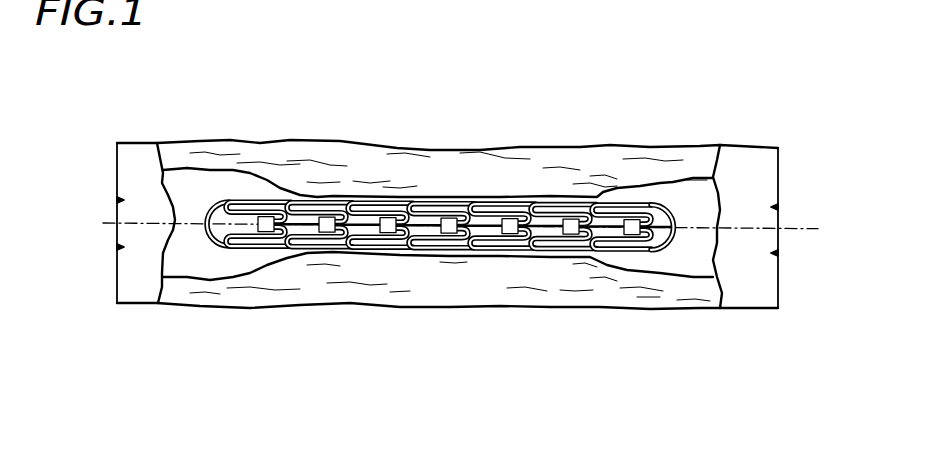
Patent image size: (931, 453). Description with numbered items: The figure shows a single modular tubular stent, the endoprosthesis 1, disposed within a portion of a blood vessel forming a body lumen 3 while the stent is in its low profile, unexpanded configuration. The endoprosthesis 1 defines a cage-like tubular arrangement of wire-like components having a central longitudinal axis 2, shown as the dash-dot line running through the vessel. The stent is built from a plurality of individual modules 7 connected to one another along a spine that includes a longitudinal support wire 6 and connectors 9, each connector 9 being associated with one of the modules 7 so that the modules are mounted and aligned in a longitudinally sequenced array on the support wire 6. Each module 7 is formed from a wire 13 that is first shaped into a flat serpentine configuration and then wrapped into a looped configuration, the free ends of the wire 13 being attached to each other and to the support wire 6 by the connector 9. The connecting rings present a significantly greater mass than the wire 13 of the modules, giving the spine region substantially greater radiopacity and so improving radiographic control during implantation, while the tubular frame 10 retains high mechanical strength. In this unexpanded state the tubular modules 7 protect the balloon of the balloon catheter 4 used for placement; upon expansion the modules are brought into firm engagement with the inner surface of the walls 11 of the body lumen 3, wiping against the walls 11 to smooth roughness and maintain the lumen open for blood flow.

The modular endoprosthesis 1 is at (625, 198).
The central longitudinal axis 2 is at (797, 230).
The body lumen 3 is at (695, 247).
The balloon catheter 4 is at (205, 210).
The longitudinal support wire 6 is at (287, 200).
The module 7 is at (507, 200).
The connector 9 is at (388, 149).
The tubular frame 10 is at (450, 200).
The walls 11 is at (364, 230).
The wire 13 is at (615, 252).